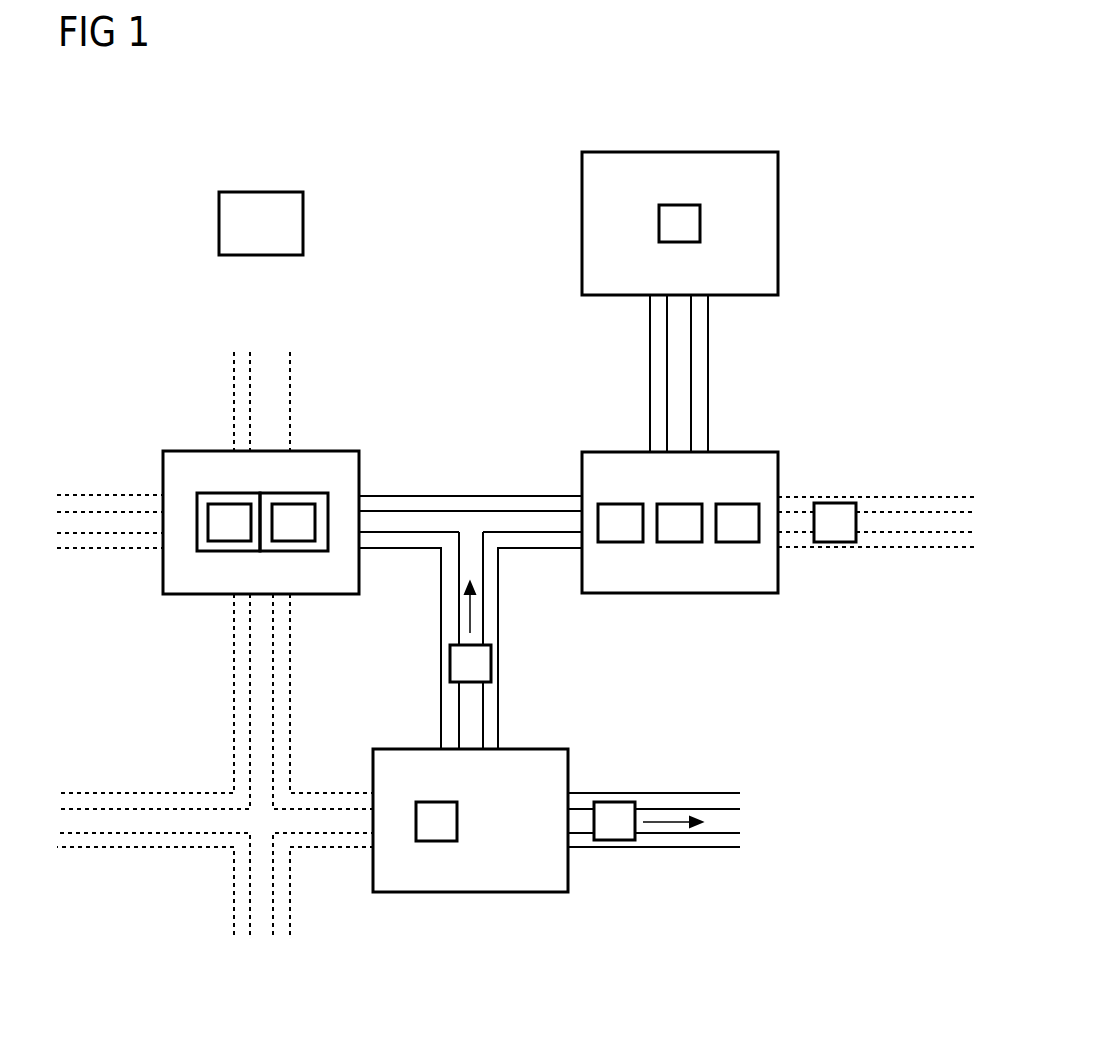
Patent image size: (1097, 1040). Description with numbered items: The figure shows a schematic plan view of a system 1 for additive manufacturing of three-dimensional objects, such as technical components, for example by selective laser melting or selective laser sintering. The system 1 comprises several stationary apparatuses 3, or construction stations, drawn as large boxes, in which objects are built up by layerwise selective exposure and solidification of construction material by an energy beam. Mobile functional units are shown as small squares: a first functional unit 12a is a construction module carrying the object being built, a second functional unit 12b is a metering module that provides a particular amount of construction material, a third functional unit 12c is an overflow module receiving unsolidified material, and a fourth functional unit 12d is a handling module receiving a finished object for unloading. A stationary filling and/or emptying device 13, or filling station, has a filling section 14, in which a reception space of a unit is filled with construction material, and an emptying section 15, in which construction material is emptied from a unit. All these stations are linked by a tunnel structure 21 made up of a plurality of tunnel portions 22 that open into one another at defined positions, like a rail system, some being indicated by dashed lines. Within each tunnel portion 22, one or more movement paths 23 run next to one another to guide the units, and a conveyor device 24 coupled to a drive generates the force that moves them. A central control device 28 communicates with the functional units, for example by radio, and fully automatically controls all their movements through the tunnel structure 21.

The system 1 is at (345, 101).
The apparatus 3 is at (728, 152).
The first functional unit 12a is at (680, 205).
The second functional unit 12b is at (300, 541).
The third functional unit 12c is at (230, 541).
The fourth functional unit 12d is at (834, 503).
The filling and/or emptying device 13 is at (163, 466).
The filling section 14 is at (300, 493).
The emptying section 15 is at (220, 493).
The tunnel structure 21 is at (448, 399).
The tunnel portion 22 is at (400, 497).
The movement path 23 is at (513, 512).
The conveyor device 24 is at (440, 523).
The central control device 28 is at (219, 225).